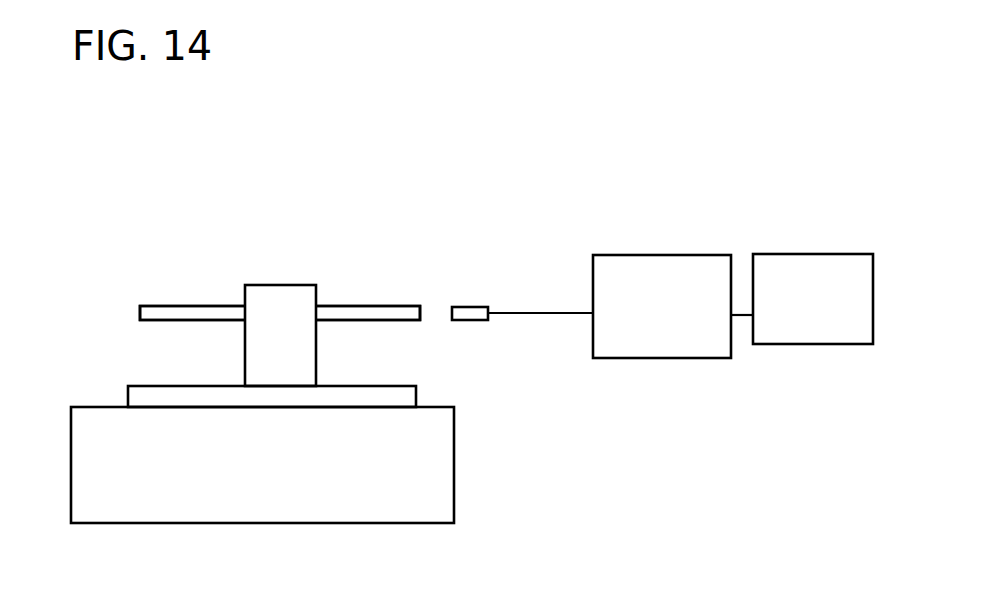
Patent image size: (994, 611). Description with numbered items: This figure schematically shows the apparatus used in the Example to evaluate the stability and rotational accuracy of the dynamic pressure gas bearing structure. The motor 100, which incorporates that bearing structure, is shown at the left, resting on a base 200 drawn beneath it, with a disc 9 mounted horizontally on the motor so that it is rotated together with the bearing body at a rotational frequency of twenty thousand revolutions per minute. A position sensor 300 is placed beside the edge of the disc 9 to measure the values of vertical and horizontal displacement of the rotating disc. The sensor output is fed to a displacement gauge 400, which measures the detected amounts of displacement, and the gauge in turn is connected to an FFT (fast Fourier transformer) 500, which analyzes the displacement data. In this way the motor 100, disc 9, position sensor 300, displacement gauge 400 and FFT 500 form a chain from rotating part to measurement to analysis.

The motor 100 is at (120, 344).
The disc 9 is at (372, 313).
The base stand 200 is at (442, 472).
The position sensor 300 is at (474, 305).
The displacement gauge 400 is at (641, 253).
The FFT (fast Fourier transformer) 500 is at (811, 254).